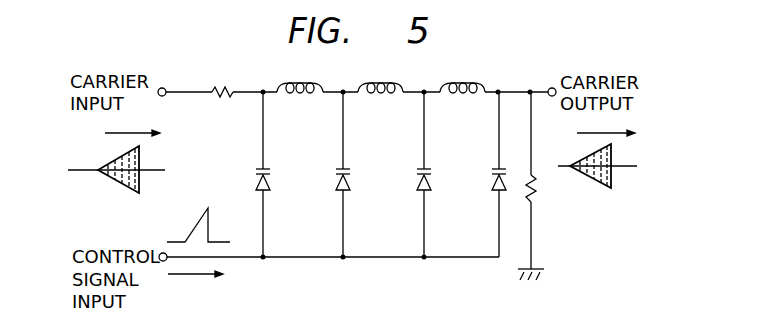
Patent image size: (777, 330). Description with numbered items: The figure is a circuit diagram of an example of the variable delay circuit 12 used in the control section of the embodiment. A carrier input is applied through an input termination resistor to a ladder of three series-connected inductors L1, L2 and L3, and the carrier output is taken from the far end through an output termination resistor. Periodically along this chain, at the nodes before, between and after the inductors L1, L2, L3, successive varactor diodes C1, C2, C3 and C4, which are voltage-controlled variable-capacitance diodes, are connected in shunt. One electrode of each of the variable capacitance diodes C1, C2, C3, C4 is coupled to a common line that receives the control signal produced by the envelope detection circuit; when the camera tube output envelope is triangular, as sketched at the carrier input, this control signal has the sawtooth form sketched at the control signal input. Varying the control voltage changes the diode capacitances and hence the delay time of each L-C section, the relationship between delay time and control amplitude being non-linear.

The variable delay circuit 12 is at (258, 72).
The inductor L1 is at (300, 104).
The inductor L2 is at (380, 104).
The inductor L3 is at (462, 104).
The varactor diode C1 is at (249, 174).
The varactor diode C2 is at (329, 174).
The varactor diode C3 is at (409, 174).
The varactor diode C4 is at (486, 174).